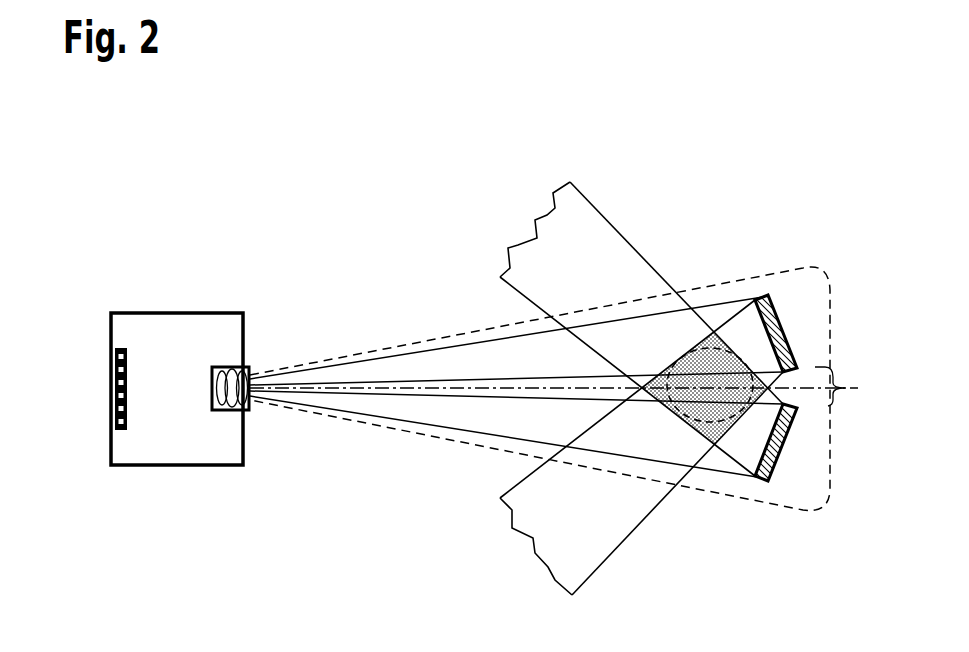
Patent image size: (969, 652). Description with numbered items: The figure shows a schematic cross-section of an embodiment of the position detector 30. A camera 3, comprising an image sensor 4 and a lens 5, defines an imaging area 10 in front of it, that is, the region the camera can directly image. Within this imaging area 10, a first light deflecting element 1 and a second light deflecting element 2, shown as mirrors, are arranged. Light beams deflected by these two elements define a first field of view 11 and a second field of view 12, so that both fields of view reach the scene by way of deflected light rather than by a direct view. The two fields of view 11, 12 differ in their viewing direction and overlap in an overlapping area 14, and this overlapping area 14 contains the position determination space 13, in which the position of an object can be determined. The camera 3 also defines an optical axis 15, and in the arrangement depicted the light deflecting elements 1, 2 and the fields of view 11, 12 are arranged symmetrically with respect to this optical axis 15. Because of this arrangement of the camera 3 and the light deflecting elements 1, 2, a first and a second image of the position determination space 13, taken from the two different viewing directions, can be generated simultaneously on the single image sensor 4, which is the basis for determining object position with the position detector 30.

The first light deflecting element 1 is at (775, 455).
The second light deflecting element 2 is at (783, 331).
The camera 3 is at (166, 427).
The image sensor 4 is at (127, 367).
The lens 5 is at (228, 367).
The imaging area 10 is at (567, 388).
The first field of view 11 is at (553, 163).
The second field of view 12 is at (490, 503).
The position determination space 13 is at (692, 347).
The overlapping area 14 is at (724, 334).
The optical axis 15 is at (838, 368).
The position detector 30 is at (333, 188).